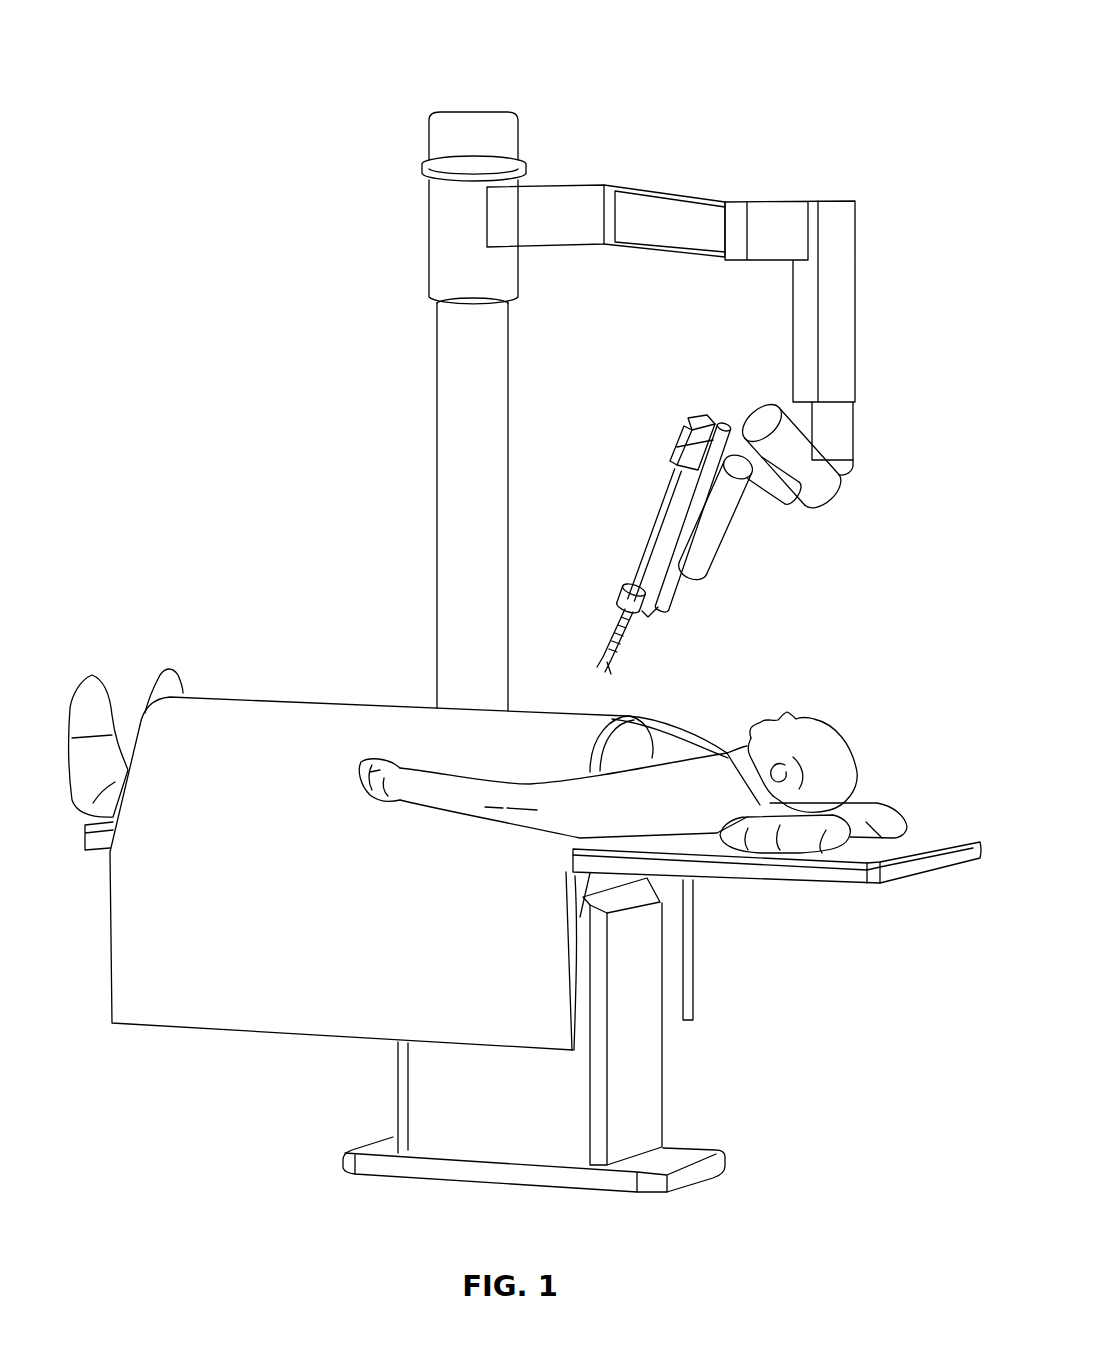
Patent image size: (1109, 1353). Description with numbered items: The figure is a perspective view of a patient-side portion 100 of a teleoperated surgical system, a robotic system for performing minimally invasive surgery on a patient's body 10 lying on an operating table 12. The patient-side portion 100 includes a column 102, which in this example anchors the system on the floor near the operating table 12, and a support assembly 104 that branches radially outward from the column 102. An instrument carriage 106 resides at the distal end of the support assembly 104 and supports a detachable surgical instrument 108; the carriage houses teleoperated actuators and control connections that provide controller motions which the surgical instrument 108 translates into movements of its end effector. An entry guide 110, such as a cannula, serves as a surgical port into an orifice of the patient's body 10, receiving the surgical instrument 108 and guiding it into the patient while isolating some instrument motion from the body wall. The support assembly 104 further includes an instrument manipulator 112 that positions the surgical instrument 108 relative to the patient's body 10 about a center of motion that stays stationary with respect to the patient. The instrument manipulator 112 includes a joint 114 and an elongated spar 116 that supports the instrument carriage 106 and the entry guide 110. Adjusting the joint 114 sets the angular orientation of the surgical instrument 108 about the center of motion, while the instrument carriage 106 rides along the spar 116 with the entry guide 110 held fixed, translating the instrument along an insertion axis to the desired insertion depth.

The patient-side portion 100 is at (806, 46).
The column 102 is at (438, 513).
The support assembly 104 is at (892, 409).
The instrument carriage 106 is at (677, 456).
The surgical instrument 108 is at (655, 536).
The entry guide 110 is at (620, 605).
The instrument manipulator 112 is at (752, 543).
The joint 114 is at (784, 508).
The elongated spar 116 is at (730, 414).
The patient's body 10 is at (663, 704).
The operating table 12 is at (937, 828).